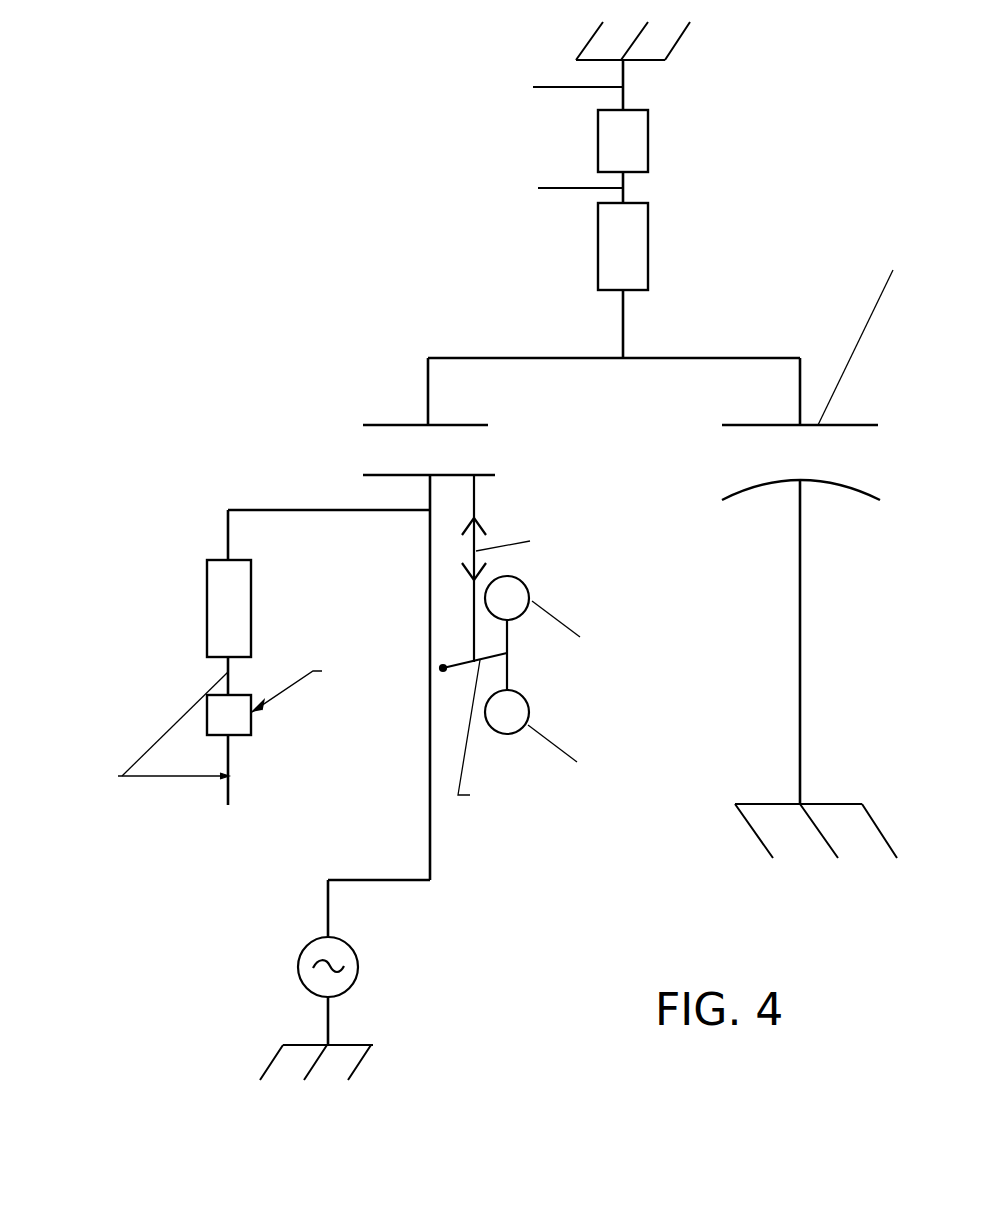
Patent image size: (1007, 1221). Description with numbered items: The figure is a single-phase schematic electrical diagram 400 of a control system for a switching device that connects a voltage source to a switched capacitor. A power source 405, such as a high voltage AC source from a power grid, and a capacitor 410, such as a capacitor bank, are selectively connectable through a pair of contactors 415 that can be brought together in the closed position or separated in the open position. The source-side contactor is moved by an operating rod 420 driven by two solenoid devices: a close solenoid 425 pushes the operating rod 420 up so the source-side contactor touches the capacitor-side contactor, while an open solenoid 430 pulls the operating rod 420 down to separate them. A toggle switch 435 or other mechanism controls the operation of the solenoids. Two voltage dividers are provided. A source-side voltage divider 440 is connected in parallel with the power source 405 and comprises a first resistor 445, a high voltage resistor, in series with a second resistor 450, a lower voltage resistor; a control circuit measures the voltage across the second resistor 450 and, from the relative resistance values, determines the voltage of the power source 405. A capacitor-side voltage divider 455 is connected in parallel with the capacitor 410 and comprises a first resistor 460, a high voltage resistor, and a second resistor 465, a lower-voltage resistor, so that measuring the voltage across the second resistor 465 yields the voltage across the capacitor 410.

The electrical diagram 400 is at (262, 300).
The power source 405 is at (342, 982).
The capacitor 410 is at (653, 375).
The contactors 415 is at (470, 425).
The operating rod 420 is at (476, 508).
The close solenoid 425 is at (530, 590).
The open solenoid 430 is at (530, 702).
The toggle switch 435 is at (462, 660).
The source-side voltage divider 440 is at (152, 630).
The first resistor 445 is at (220, 570).
The second resistor 450 is at (238, 728).
The capacitor-side voltage divider 455 is at (722, 177).
The first resistor 460 is at (607, 285).
The second resistor 465 is at (527, 191).